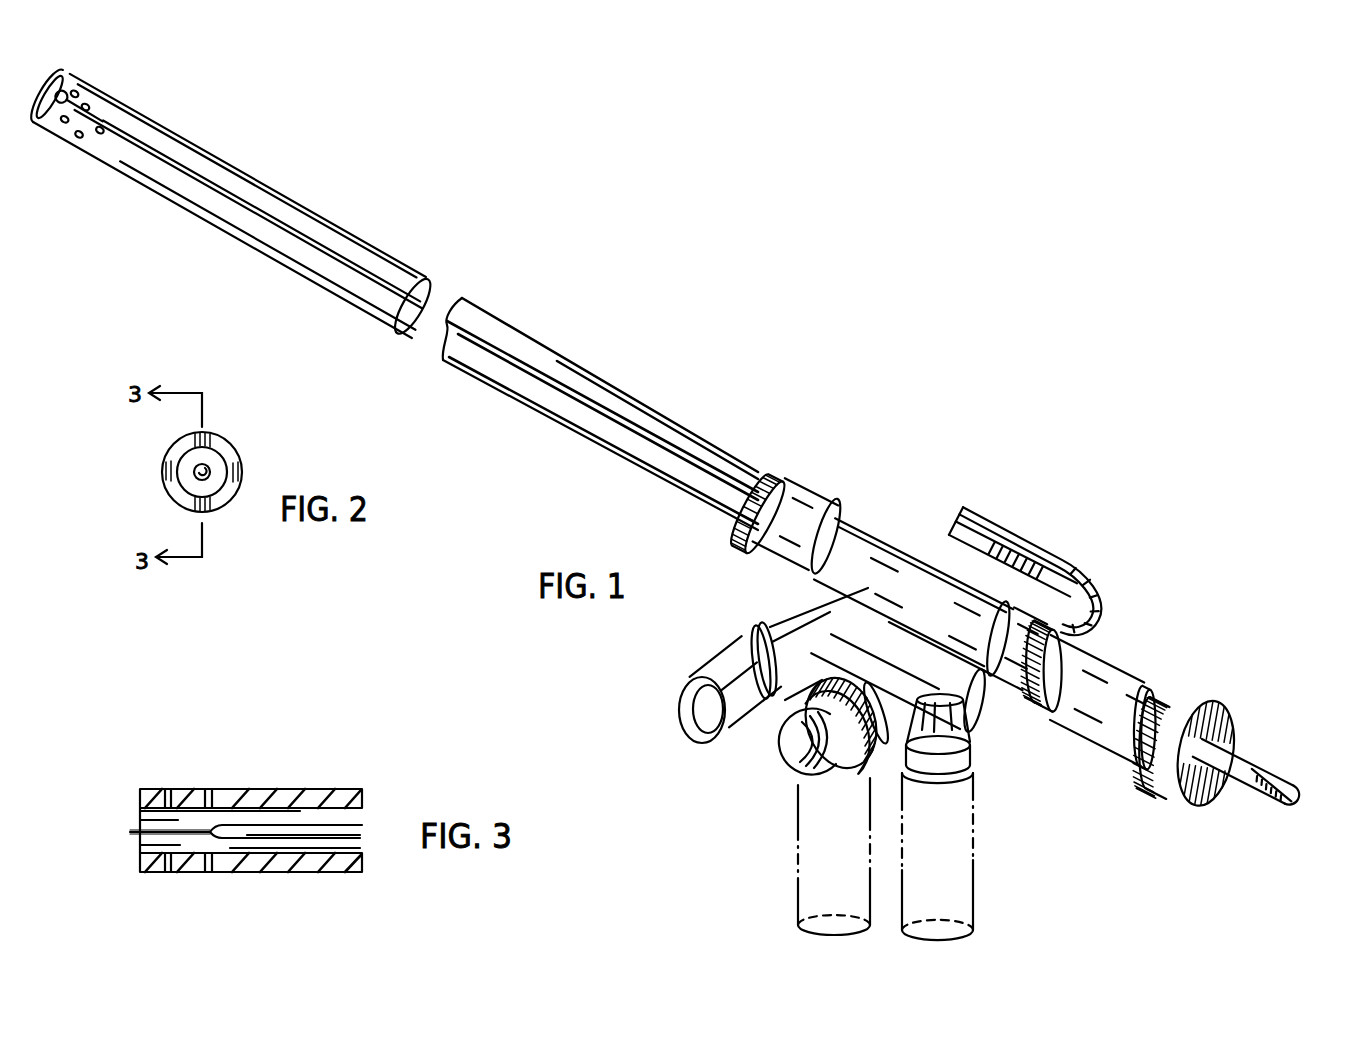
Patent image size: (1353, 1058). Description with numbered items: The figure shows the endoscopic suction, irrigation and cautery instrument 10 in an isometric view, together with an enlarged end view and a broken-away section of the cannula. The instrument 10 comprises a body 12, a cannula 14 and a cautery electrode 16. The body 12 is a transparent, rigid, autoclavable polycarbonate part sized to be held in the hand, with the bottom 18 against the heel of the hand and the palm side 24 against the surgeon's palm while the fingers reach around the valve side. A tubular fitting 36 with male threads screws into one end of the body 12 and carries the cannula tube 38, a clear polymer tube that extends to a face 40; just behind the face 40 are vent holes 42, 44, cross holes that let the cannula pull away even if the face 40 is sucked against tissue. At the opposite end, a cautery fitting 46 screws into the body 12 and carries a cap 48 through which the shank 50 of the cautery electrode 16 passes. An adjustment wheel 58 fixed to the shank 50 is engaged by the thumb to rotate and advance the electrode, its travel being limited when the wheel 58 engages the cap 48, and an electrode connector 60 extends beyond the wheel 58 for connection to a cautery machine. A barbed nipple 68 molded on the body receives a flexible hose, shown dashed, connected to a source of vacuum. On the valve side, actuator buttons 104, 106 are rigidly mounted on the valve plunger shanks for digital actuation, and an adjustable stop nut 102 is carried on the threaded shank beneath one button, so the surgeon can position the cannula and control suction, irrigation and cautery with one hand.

In FIG. 1, the endoscopic suction, irrigation and cautery instrument 10 is at (784, 425).
In FIG. 1, the body 12 is at (898, 531).
In FIG. 1, the cannula 14 is at (527, 330).
In FIG. 2, the cannula 14 is at (233, 437).
In FIG. 3, the cannula 14 is at (368, 788).
In FIG. 1, the cautery electrode 16 is at (332, 250).
In FIG. 2, the cautery electrode 16 is at (197, 477).
In FIG. 3, the cautery electrode 16 is at (236, 836).
In FIG. 1, the bottom 18 is at (1027, 542).
In FIG. 1, the palm side 24 is at (953, 607).
In FIG. 1, the tubular fitting 36 is at (848, 507).
In FIG. 2, the cannula tube 38 is at (243, 458).
In FIG. 3, the cannula tube 38 is at (298, 800).
In FIG. 2, the face 40 is at (170, 452).
In FIG. 3, the face 40 is at (140, 862).
In FIG. 3, the vent hole 42 is at (165, 800).
In FIG. 3, the vent hole 44 is at (212, 800).
In FIG. 1, the cautery fitting 46 is at (1087, 637).
In FIG. 1, the cap 48 is at (1153, 672).
In FIG. 1, the shank 50 is at (1243, 782).
In FIG. 1, the adjustment wheel 58 is at (1167, 795).
In FIG. 1, the electrode connector 60 is at (1252, 802).
In FIG. 1, the nipple 68 is at (923, 780).
In FIG. 1, the adjustable stop nut 102 is at (833, 790).
In FIG. 1, the actuator button 104 is at (693, 710).
In FIG. 1, the actuator button 106 is at (785, 758).